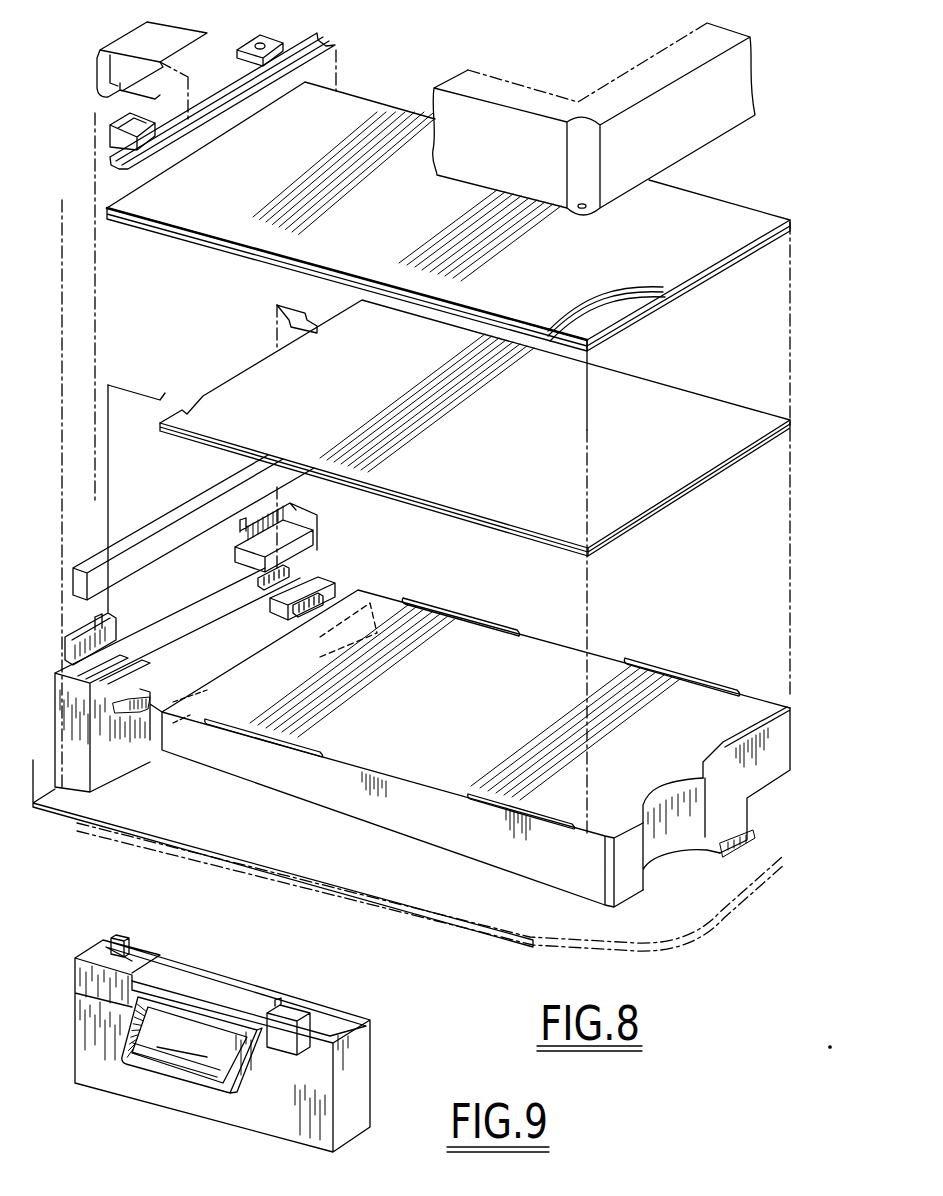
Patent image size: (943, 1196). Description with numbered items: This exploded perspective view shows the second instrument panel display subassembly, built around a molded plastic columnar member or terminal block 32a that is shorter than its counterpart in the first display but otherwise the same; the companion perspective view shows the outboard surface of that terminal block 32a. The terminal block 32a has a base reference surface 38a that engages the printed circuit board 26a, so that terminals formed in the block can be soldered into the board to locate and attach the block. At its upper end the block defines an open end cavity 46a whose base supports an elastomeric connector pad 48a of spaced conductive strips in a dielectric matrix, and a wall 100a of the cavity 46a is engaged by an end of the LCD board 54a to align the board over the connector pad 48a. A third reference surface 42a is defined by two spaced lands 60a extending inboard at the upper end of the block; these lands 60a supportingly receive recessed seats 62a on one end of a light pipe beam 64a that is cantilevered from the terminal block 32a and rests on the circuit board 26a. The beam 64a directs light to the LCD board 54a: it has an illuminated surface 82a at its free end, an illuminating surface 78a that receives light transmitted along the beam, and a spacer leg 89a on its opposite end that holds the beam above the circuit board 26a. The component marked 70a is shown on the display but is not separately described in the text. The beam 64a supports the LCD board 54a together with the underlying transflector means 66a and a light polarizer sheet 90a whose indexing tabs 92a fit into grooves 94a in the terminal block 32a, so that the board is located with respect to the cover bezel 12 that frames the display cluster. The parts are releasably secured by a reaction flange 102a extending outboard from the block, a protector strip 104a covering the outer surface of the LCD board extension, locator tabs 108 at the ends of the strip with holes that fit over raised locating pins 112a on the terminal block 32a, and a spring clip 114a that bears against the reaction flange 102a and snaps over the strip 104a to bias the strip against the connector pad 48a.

In FIG. 8, the cover bezel 12 is at (547, 90).
In FIG. 8, the spring clip 114a is at (117, 40).
In FIG. 8, the protector strip 104a is at (345, 18).
In FIG. 8, the locator tabs 108 is at (108, 135).
In FIG. 8, the LCD board 54a is at (697, 200).
In FIG. 8, the transflector means 66a is at (703, 389).
In FIG. 8, the indexing tabs 92a is at (290, 323).
In FIG. 8, the elastomeric connector pad 48a is at (186, 498).
In FIG. 8, the terminal block 32a is at (120, 757).
In FIG. 9, the terminal block 32a is at (266, 1046).
In FIG. 8, the grooves 94a is at (260, 578).
In FIG. 8, the third reference surface 42a is at (293, 593).
In FIG. 8, the raised locating pins 112a is at (247, 540).
In FIG. 9, the raised locating pins 112a is at (278, 1002).
In FIG. 8, the recessed seats 62a is at (357, 603).
In FIG. 8, the light pipe beam 64a is at (542, 660).
In FIG. 8, the reflector strip 70a is at (467, 608).
In FIG. 8, the illuminating surface 78a is at (573, 653).
In FIG. 8, the illuminated surface 82a is at (683, 792).
In FIG. 8, the spacer leg 89a is at (733, 818).
In FIG. 8, the light polarizer sheet 90a is at (723, 857).
In FIG. 8, the lands 60a is at (143, 713).
In FIG. 8, the base reference surface 38a is at (78, 792).
In FIG. 8, the printed circuit board 26a is at (452, 927).
In FIG. 9, the open end cavity 46a is at (205, 994).
In FIG. 9, the cavity wall 100a is at (115, 937).
In FIG. 9, the reaction flange 102a is at (180, 1084).